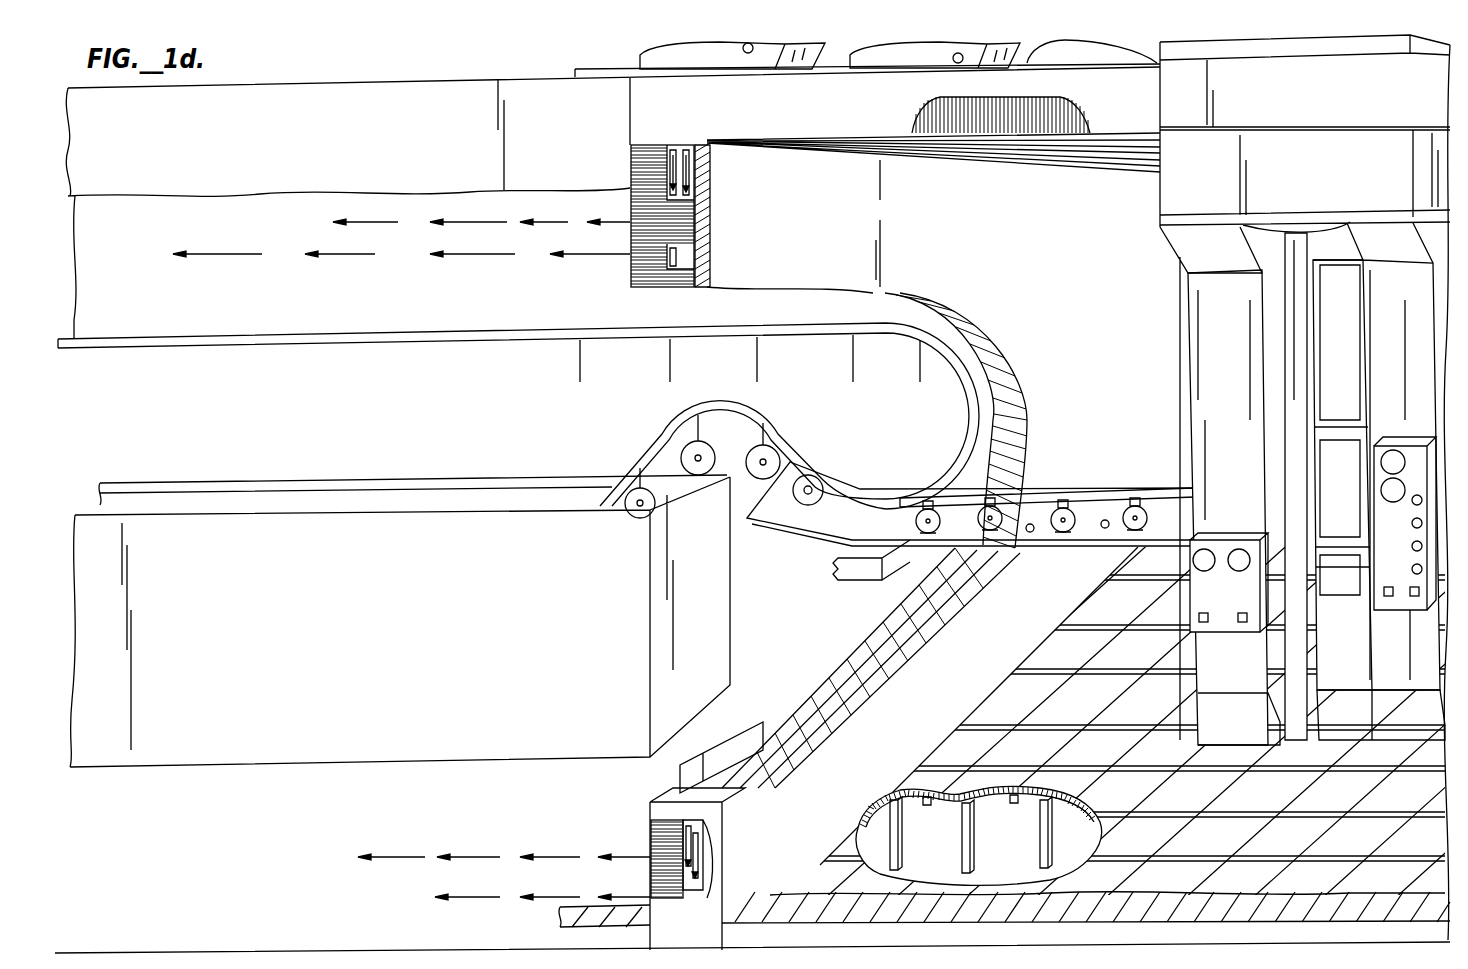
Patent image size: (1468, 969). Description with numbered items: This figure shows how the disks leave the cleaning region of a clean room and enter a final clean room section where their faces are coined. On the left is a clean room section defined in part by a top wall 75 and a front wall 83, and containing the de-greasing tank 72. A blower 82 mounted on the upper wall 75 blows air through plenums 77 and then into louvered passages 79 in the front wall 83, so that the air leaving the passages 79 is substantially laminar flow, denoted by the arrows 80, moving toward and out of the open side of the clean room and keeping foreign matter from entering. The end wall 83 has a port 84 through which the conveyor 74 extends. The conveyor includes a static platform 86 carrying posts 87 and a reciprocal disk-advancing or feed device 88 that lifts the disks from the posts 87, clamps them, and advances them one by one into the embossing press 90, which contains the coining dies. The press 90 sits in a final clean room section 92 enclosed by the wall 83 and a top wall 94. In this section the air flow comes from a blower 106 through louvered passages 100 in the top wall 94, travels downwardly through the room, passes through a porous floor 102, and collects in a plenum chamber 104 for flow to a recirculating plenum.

The de-greasing tank 72 is at (853, 471).
The conveyor 74 is at (817, 537).
The top wall 75 is at (438, 92).
The plenums 77 is at (687, 178).
The louvered passages 79 is at (630, 167).
The arrows 80 is at (353, 257).
The blower 82 is at (640, 54).
The front wall 83 is at (762, 224).
The port 84 is at (888, 567).
The static platform 86 is at (1013, 540).
The posts 87 is at (1104, 530).
The disk-advancing device 88 is at (1115, 495).
The embossing press 90 is at (1435, 415).
The final clean room section 92 is at (1067, 311).
The top wall 94 is at (1120, 117).
The louvered passages 100 is at (1030, 125).
The porous floor 102 is at (1064, 808).
The plenum chamber 104 is at (1003, 845).
The blower 106 is at (1020, 63).